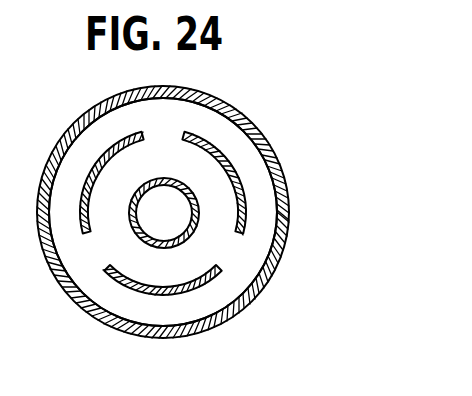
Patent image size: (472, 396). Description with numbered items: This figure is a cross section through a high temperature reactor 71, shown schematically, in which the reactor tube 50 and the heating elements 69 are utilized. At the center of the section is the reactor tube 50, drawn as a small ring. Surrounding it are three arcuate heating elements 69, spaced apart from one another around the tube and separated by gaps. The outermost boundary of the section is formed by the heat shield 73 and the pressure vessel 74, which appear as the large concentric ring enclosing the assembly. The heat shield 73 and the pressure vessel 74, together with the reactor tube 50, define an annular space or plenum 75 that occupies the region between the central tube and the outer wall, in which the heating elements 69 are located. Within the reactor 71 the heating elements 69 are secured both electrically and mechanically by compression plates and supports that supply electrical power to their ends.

The reactor 71 is at (262, 107).
The heat shield 73 is at (288, 184).
The pressure vessel 74 is at (97, 320).
The heating elements 69 is at (228, 159).
The reactor tube 50 is at (135, 232).
The annular space or plenum 75 is at (245, 263).